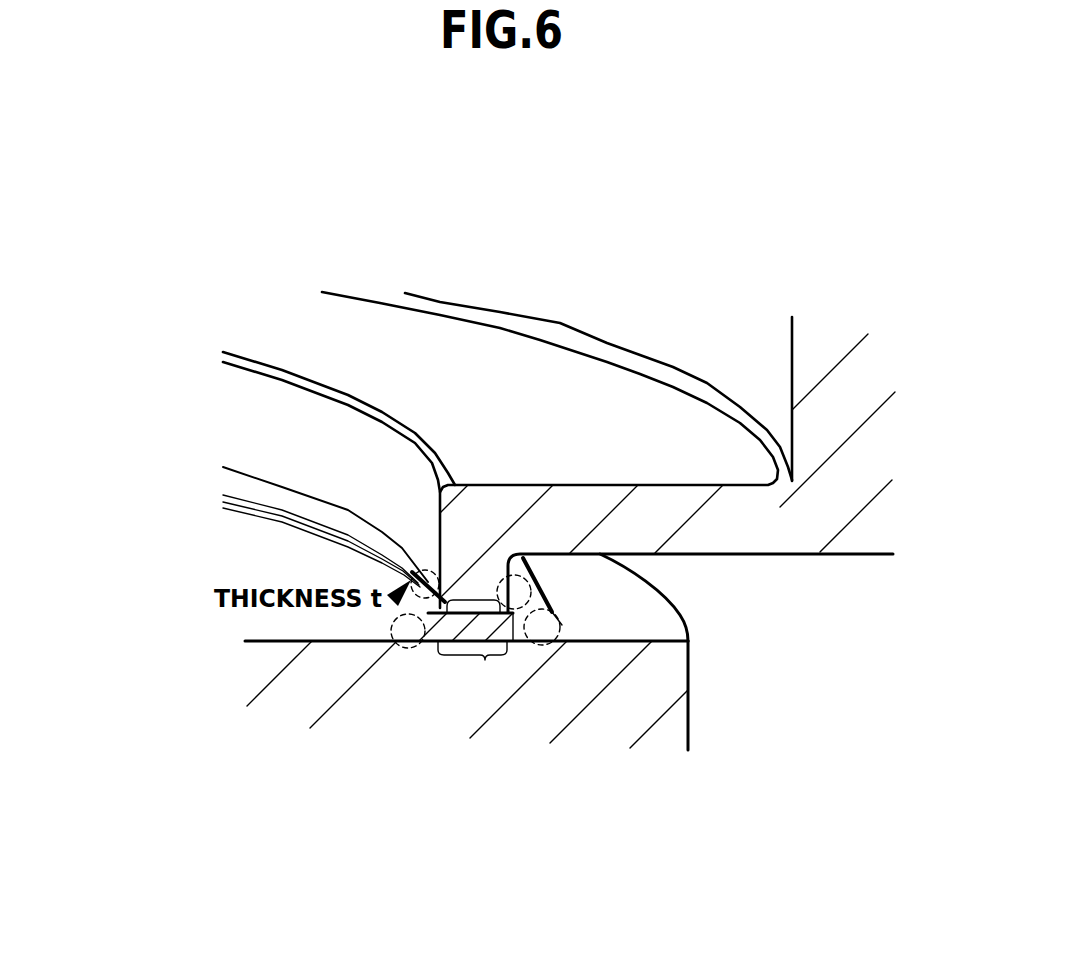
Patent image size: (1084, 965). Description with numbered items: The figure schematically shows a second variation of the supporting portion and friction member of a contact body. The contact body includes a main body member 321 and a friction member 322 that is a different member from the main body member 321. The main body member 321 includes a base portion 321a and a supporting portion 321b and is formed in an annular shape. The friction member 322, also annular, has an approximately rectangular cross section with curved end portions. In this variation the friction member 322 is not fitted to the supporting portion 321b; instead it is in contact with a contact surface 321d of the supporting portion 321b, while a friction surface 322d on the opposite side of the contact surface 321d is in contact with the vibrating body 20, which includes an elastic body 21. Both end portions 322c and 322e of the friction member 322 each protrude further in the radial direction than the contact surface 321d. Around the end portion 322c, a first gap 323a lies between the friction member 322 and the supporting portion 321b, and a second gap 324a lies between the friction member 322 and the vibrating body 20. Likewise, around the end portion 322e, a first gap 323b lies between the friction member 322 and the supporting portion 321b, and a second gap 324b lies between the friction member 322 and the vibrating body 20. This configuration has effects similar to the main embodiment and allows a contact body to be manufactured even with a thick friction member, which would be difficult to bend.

The main body member 321 is at (785, 124).
The base portion 321a is at (676, 429).
The supporting portion 321b is at (507, 414).
The contact surface 321d is at (359, 402).
The friction member 322 is at (528, 643).
The end portion of friction member 322c is at (533, 612).
The friction surface 322d is at (485, 660).
The end portion of friction member 322e is at (401, 596).
The first gap 323a is at (523, 592).
The first gap 323b is at (256, 495).
The second gap 324a is at (552, 613).
The second gap 324b is at (400, 641).
The elastic body 21 is at (482, 641).
The vibrating body 20 is at (466, 740).